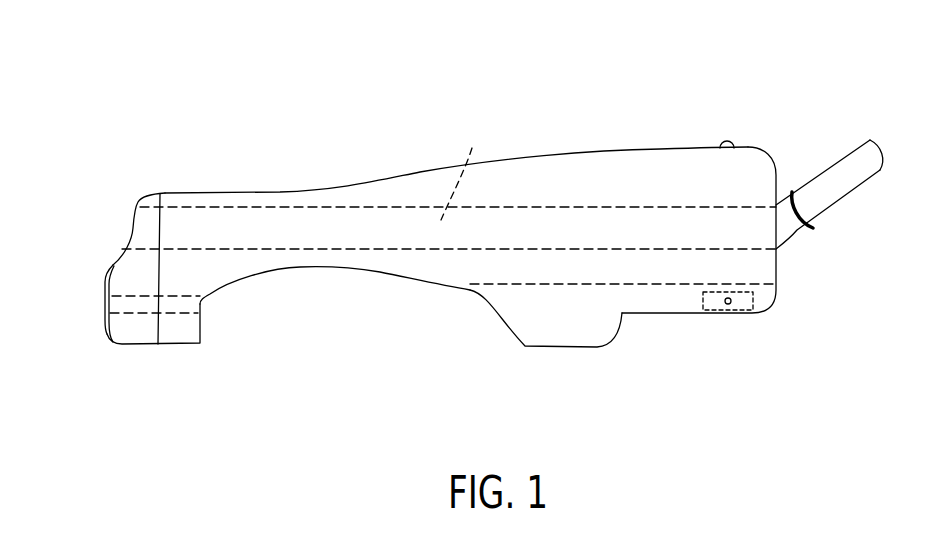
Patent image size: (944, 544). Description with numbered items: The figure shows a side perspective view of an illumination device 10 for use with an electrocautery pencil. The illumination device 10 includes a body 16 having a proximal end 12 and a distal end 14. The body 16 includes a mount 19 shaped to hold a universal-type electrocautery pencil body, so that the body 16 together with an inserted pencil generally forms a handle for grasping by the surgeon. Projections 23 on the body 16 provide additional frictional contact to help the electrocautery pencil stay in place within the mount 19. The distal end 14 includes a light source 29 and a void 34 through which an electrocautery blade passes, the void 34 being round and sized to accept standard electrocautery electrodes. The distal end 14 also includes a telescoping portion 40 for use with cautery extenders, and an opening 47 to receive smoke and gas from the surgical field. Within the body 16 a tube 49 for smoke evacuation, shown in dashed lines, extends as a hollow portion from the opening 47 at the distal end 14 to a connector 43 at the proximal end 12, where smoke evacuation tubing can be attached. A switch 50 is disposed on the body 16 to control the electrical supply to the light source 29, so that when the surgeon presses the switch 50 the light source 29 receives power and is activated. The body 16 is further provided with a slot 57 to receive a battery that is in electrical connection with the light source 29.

The illumination device 10 is at (137, 92).
The proximal end 12 is at (789, 343).
The distal end 14 is at (106, 362).
The body 16 is at (286, 191).
The mount 19 is at (362, 291).
The projections 23 is at (558, 328).
The light source 29 is at (106, 287).
The void 34 is at (107, 300).
The telescoping portion 40 is at (137, 333).
The connector 43 is at (840, 180).
The opening 47 is at (128, 238).
The tube 49 is at (463, 170).
The switch 50 is at (730, 140).
The slot 57 is at (742, 303).